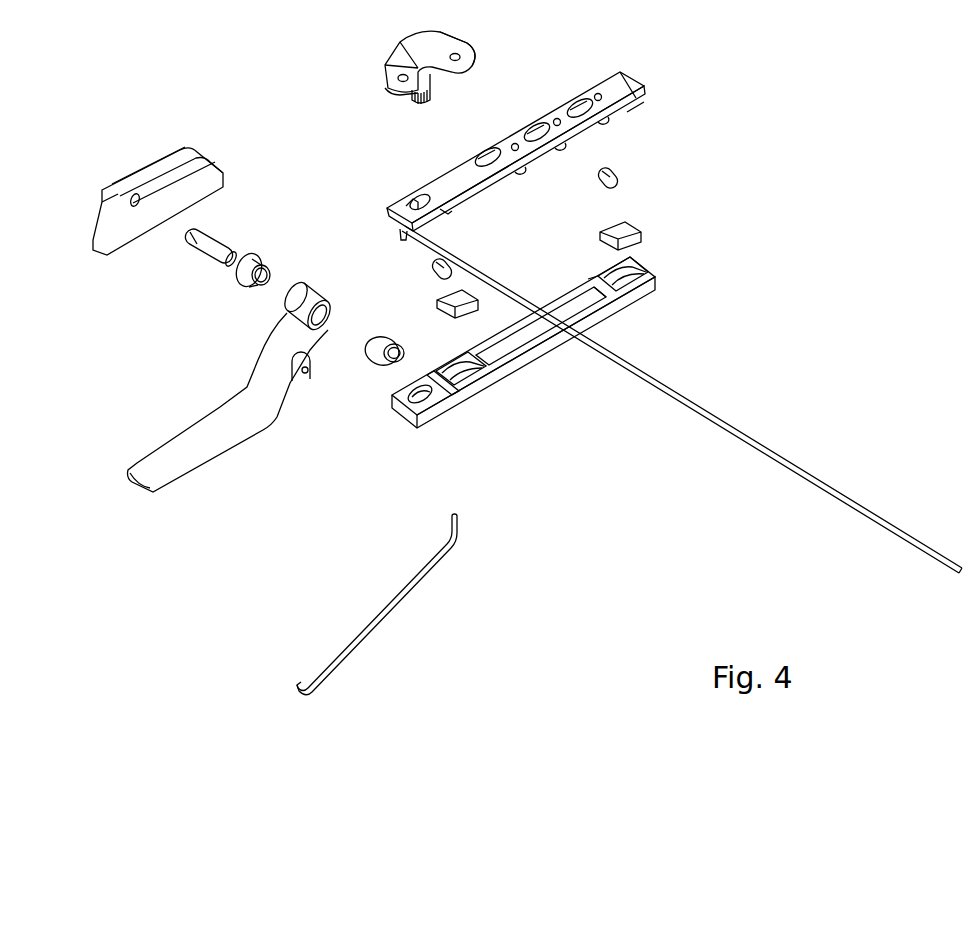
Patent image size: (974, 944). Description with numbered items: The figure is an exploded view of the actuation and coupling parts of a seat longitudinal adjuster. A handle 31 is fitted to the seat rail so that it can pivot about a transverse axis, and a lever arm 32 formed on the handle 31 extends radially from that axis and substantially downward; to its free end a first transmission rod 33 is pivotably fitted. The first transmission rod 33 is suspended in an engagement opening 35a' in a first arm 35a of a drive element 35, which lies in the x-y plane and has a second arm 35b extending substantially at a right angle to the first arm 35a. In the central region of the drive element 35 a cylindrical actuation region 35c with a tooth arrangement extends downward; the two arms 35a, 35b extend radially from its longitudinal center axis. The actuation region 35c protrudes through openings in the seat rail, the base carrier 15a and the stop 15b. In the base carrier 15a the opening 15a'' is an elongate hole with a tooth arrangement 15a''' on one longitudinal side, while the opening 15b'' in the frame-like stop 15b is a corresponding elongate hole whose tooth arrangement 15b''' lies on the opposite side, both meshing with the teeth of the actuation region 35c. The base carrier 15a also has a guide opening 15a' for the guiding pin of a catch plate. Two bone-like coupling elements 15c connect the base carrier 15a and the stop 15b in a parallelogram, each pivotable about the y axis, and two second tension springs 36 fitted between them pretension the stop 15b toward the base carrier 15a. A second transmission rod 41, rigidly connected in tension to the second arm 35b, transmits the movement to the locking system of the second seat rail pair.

The base carrier 15a is at (506, 148).
The guide opening 15a' is at (556, 104).
The opening 15a'' is at (482, 222).
The tooth arrangement 15a''' is at (362, 202).
The stop 15b is at (551, 366).
The opening 15b'' is at (395, 428).
The tooth arrangement 15b''' is at (460, 433).
The coupling element 15c is at (450, 302).
The handle 31 is at (173, 465).
The lever arm 32 is at (305, 378).
The first transmission rod 33 is at (397, 593).
The drive element 35 is at (413, 52).
The first arm 35a is at (471, 42).
The engagement opening 35a' is at (473, 89).
The second arm 35b is at (385, 82).
The actuation region 35c is at (420, 98).
The second tension spring 36 is at (432, 260).
The second transmission rod 41 is at (768, 452).